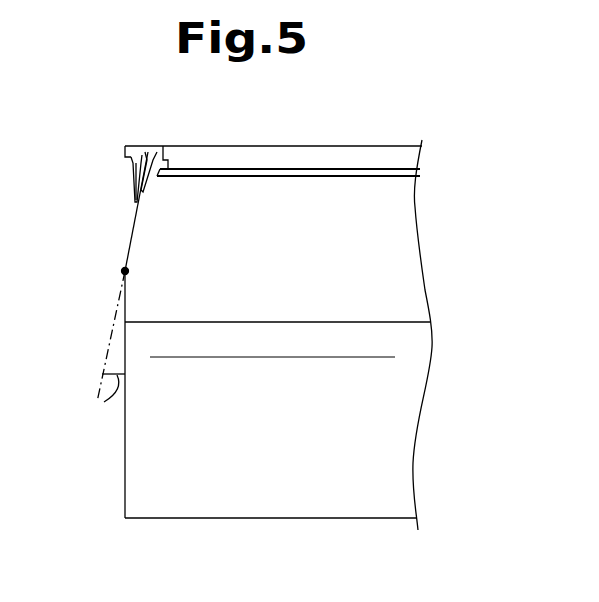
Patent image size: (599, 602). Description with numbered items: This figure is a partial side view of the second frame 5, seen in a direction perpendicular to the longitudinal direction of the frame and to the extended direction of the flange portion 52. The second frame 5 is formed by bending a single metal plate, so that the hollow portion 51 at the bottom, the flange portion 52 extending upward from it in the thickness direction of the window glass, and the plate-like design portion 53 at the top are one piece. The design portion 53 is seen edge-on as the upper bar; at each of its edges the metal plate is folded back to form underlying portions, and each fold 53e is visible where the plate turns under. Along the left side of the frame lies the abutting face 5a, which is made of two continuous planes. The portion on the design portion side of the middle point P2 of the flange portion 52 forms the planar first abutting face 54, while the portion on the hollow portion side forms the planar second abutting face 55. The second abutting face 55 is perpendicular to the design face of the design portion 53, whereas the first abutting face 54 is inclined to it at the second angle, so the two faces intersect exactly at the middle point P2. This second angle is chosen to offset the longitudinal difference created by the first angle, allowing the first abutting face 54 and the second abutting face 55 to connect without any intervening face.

The second frame 5 is at (331, 121).
The abutting face 5a is at (150, 150).
The hollow portion 51 is at (285, 516).
The flange portion 52 is at (408, 285).
The design portion 53 is at (252, 155).
The fold 53e is at (127, 152).
The first abutting face 54 is at (135, 178).
The second abutting face 55 is at (125, 463).
The middle point P2 is at (122, 271).